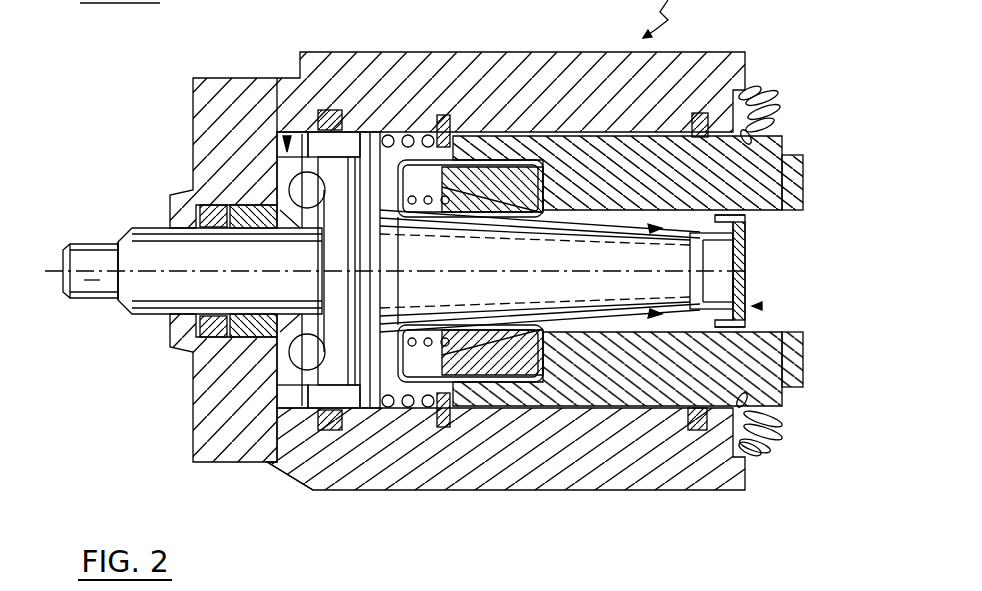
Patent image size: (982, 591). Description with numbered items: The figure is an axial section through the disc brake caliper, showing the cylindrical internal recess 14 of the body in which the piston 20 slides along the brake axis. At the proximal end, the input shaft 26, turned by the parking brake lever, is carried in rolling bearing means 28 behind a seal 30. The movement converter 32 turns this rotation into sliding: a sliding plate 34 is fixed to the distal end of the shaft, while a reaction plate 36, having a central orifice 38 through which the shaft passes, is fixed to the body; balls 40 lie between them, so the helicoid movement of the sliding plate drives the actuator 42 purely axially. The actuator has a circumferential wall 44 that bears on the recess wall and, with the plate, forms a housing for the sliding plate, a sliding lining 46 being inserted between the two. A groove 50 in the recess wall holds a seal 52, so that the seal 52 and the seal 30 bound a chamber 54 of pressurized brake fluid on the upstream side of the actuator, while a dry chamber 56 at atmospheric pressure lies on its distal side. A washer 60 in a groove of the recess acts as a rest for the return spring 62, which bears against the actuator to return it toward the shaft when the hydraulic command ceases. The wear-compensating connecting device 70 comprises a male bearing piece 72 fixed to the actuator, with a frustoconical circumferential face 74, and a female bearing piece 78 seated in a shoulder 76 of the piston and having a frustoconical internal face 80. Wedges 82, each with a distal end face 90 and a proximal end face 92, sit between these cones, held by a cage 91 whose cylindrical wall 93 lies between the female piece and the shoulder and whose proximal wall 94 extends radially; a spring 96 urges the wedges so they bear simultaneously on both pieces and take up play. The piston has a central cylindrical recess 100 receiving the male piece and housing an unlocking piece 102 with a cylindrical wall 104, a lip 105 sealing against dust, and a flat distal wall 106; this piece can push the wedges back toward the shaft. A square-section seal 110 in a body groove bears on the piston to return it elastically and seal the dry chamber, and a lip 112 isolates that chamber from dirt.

The internal recess 14 is at (250, 458).
The piston 20 is at (792, 387).
The input shaft 26 is at (95, 300).
The rolling bearing means 28 is at (205, 372).
The seal 30 is at (173, 350).
The movement converter 32 is at (292, 452).
The sliding plate 34 is at (325, 245).
The reaction plate 36 is at (200, 440).
The central orifice 38 is at (283, 309).
The balls 40 is at (308, 172).
The actuator 42 is at (427, 110).
The circumferential wall 44 is at (380, 133).
The sliding lining 46 is at (345, 385).
The groove 50 is at (355, 132).
The seal 52 is at (335, 108).
The chamber 54 is at (287, 150).
The dry chamber 56 is at (385, 405).
The washer 60 is at (510, 128).
The return spring 62 is at (457, 112).
The connecting device 70 is at (527, 377).
The male bearing piece 72 is at (670, 260).
The circumferential face 74 is at (640, 214).
The shoulder 76 is at (570, 192).
The female bearing piece 78 is at (490, 367).
The internal face 80 is at (497, 170).
The wedges 82 is at (463, 205).
The distal end face 90 is at (654, 189).
The cage 91 is at (470, 188).
The proximal end face 92 is at (478, 408).
The circumferential cylindrical wall 93 is at (423, 380).
The proximal wall 94 is at (470, 353).
The spring 96 is at (427, 205).
The cylindrical recess 100 is at (762, 306).
The unlocking piece 102 is at (752, 237).
The cylindrical wall 104 is at (642, 335).
The lip 105 is at (712, 271).
The flat distal wall 106 is at (748, 285).
The seal 110 is at (707, 110).
The lip 112 is at (770, 92).